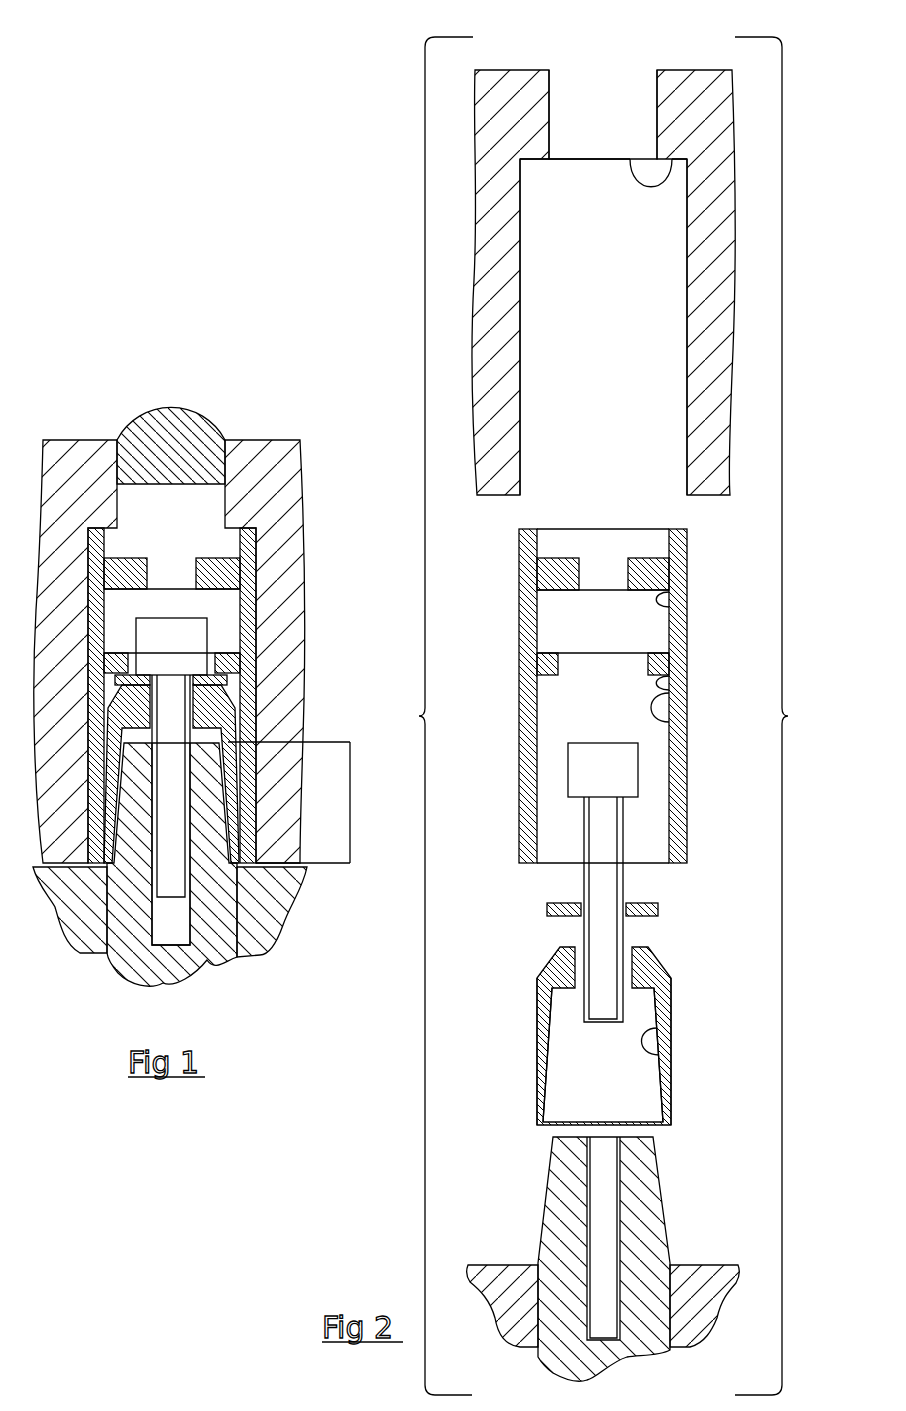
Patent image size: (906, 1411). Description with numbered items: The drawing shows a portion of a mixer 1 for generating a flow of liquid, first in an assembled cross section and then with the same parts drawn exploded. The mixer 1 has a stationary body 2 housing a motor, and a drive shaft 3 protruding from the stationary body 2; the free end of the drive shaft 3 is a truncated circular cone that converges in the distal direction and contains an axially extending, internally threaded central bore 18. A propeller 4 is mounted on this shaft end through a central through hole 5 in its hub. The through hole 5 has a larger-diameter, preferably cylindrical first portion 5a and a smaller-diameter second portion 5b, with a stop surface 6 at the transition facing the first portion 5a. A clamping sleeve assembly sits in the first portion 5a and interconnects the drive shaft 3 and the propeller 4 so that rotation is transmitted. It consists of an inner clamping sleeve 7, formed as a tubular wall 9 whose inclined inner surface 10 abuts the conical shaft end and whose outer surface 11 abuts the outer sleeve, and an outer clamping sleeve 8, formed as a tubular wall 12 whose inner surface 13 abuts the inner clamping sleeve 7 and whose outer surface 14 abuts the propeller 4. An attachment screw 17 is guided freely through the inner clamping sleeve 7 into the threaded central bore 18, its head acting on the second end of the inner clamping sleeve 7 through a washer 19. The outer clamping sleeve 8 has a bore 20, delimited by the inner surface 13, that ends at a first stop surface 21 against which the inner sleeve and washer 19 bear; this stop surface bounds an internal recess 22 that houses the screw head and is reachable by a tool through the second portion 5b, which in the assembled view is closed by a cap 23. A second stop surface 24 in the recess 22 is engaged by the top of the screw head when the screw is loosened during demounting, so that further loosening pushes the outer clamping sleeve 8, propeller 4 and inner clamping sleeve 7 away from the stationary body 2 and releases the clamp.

In FIG. 1, the mixer 1 is at (197, 327).
In FIG. 1, the stationary body 2 is at (258, 948).
In FIG. 2, the stationary body 2 is at (710, 1270).
In FIG. 1, the drive shaft 3 is at (190, 960).
In FIG. 2, the drive shaft 3 is at (633, 1255).
In FIG. 1, the propeller 4 is at (290, 450).
In FIG. 2, the propeller 4 is at (476, 277).
In FIG. 2, the central through hole 5 is at (603, 257).
In FIG. 2, the first portion of the central through hole 5a is at (581, 231).
In FIG. 2, the second portion of the central through hole 5b is at (594, 138).
In FIG. 2, the stop surface 6 is at (636, 167).
In FIG. 1, the inner clamping sleeve 7 is at (245, 690).
In FIG. 2, the inner clamping sleeve 7 is at (603, 1036).
In FIG. 1, the outer clamping sleeve 8 is at (221, 736).
In FIG. 2, the outer clamping sleeve 8 is at (603, 696).
In FIG. 2, the tubular wall 9 is at (538, 1066).
In FIG. 2, the inner surface 10 is at (660, 1040).
In FIG. 2, the outer surface 11 is at (670, 1083).
In FIG. 2, the tubular wall 12 is at (520, 772).
In FIG. 2, the inner surface 13 is at (672, 708).
In FIG. 2, the outer surface 14 is at (688, 748).
In FIG. 2, the attachment screw 17 is at (605, 885).
In FIG. 2, the central bore 18 is at (605, 1155).
In FIG. 2, the washer 19 is at (660, 908).
In FIG. 2, the bore 20 is at (653, 797).
In FIG. 2, the first stop surface 21 is at (668, 683).
In FIG. 1, the internal recess 22 is at (223, 632).
In FIG. 2, the internal recess 22 is at (582, 627).
In FIG. 1, the cap 23 is at (200, 410).
In FIG. 2, the second stop surface 24 is at (668, 602).